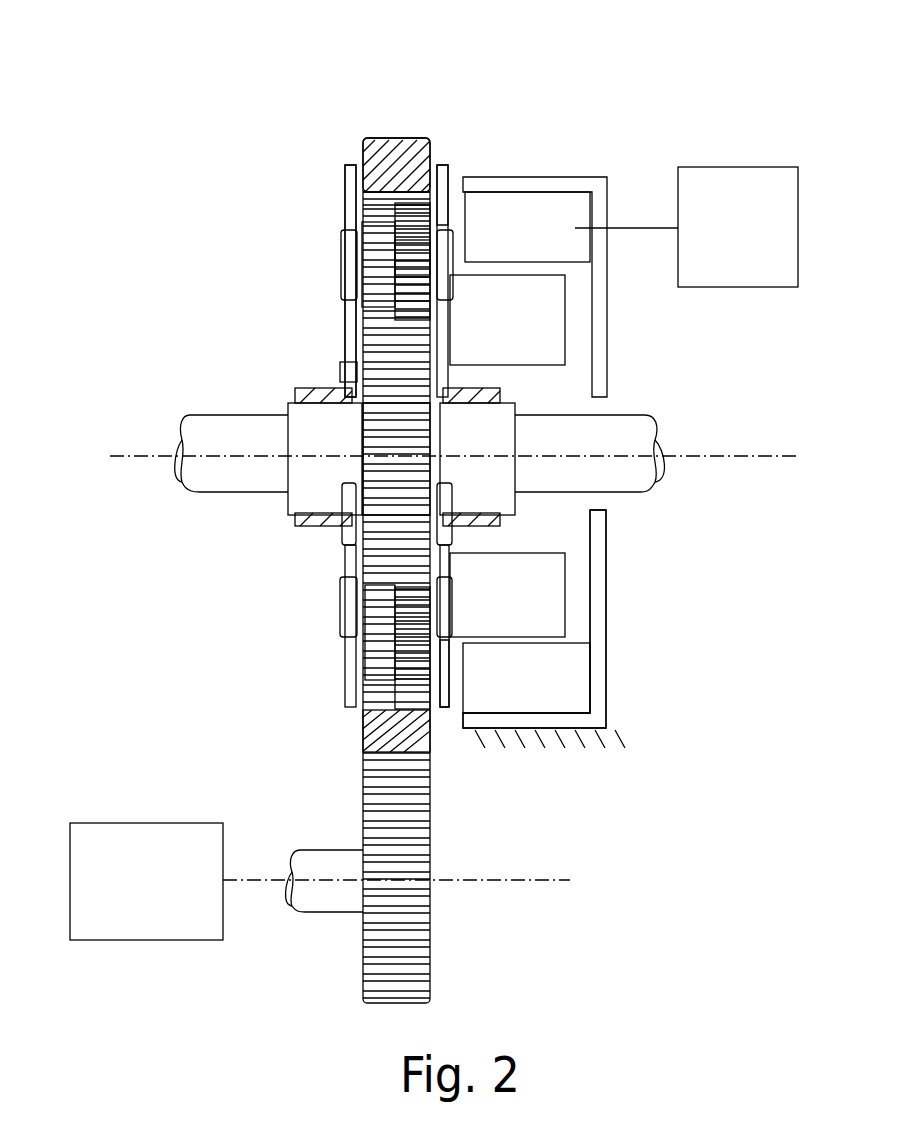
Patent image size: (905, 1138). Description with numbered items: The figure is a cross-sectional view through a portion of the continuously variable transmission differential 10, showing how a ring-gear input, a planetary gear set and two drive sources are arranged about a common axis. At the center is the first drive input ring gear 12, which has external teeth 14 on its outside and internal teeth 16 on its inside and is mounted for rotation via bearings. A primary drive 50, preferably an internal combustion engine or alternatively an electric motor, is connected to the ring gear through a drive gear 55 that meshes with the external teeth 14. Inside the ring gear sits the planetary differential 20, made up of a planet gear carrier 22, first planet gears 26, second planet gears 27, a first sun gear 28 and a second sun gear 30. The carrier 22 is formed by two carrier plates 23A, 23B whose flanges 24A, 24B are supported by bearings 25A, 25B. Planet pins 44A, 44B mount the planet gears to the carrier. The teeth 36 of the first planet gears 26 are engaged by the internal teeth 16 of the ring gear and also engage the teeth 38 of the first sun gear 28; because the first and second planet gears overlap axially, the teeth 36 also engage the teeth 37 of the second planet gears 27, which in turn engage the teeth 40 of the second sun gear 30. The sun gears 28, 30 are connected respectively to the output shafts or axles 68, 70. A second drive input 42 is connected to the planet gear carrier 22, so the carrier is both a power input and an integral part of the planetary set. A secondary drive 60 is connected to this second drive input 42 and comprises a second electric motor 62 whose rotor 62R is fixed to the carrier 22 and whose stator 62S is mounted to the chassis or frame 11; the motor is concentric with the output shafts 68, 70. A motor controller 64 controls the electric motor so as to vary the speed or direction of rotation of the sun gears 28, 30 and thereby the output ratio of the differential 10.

The CVT differential 10 is at (568, 88).
The chassis or frame 11 is at (540, 745).
The first drive input ring gear 12 is at (385, 150).
The external teeth 14 is at (400, 140).
The internal teeth 16 is at (375, 197).
The planetary differential 20 is at (340, 313).
The planet gear carrier 22 is at (447, 200).
The carrier plate 23A is at (440, 178).
The carrier plate 23B is at (345, 340).
The flange 24A is at (500, 394).
The flange 24B is at (307, 386).
The bearing 25A is at (500, 518).
The bearing 25B is at (310, 518).
The first planet gears 26 is at (377, 225).
The second planet gears 27 is at (410, 255).
The first sun gear 28 is at (340, 372).
The second sun gear 30 is at (445, 372).
The teeth 36 is at (352, 615).
The teeth 37 is at (380, 265).
The teeth 38 is at (378, 413).
The teeth 40 is at (420, 437).
The second drive input 42 is at (445, 712).
The planet pin 44A is at (347, 540).
The planet pin 44B is at (347, 255).
The primary drive 50 is at (216, 881).
The drive gear 55 is at (425, 930).
The secondary drive 60 is at (612, 677).
The second electric motor 62 is at (598, 583).
The stator 62S is at (526, 452).
The rotor 62R is at (507, 456).
The motor controller 64 is at (686, 227).
The output shaft 68 is at (182, 472).
The output shaft 70 is at (640, 480).